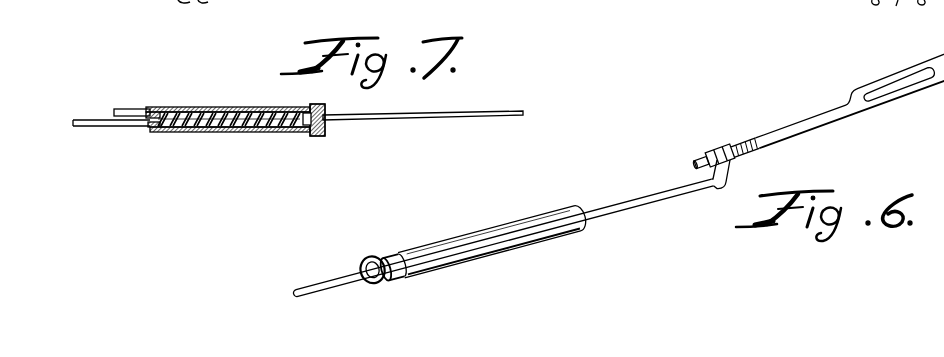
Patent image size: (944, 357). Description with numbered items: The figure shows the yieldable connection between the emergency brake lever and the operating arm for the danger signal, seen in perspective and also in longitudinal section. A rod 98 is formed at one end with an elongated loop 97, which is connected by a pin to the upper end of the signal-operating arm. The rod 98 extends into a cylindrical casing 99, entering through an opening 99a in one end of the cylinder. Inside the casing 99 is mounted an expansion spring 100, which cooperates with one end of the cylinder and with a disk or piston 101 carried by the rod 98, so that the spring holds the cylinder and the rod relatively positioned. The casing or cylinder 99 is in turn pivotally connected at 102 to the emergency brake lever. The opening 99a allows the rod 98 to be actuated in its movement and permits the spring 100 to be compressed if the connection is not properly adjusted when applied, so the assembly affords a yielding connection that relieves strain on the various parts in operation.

In FIG. 6, the elongated loop 97 is at (904, 88).
In FIG. 7, the rod 98 is at (410, 118).
In FIG. 6, the rod 98 is at (647, 203).
In FIG. 7, the cylindrical casing 99 is at (228, 127).
In FIG. 6, the cylindrical casing 99 is at (478, 253).
In FIG. 7, the opening 99a is at (143, 132).
In FIG. 6, the opening 99a is at (402, 276).
In FIG. 7, the expansion spring 100 is at (237, 108).
In FIG. 7, the disk or piston 101 is at (325, 121).
In FIG. 7, the pivotal connection 102 is at (129, 108).
In FIG. 6, the pivotal connection 102 is at (368, 259).